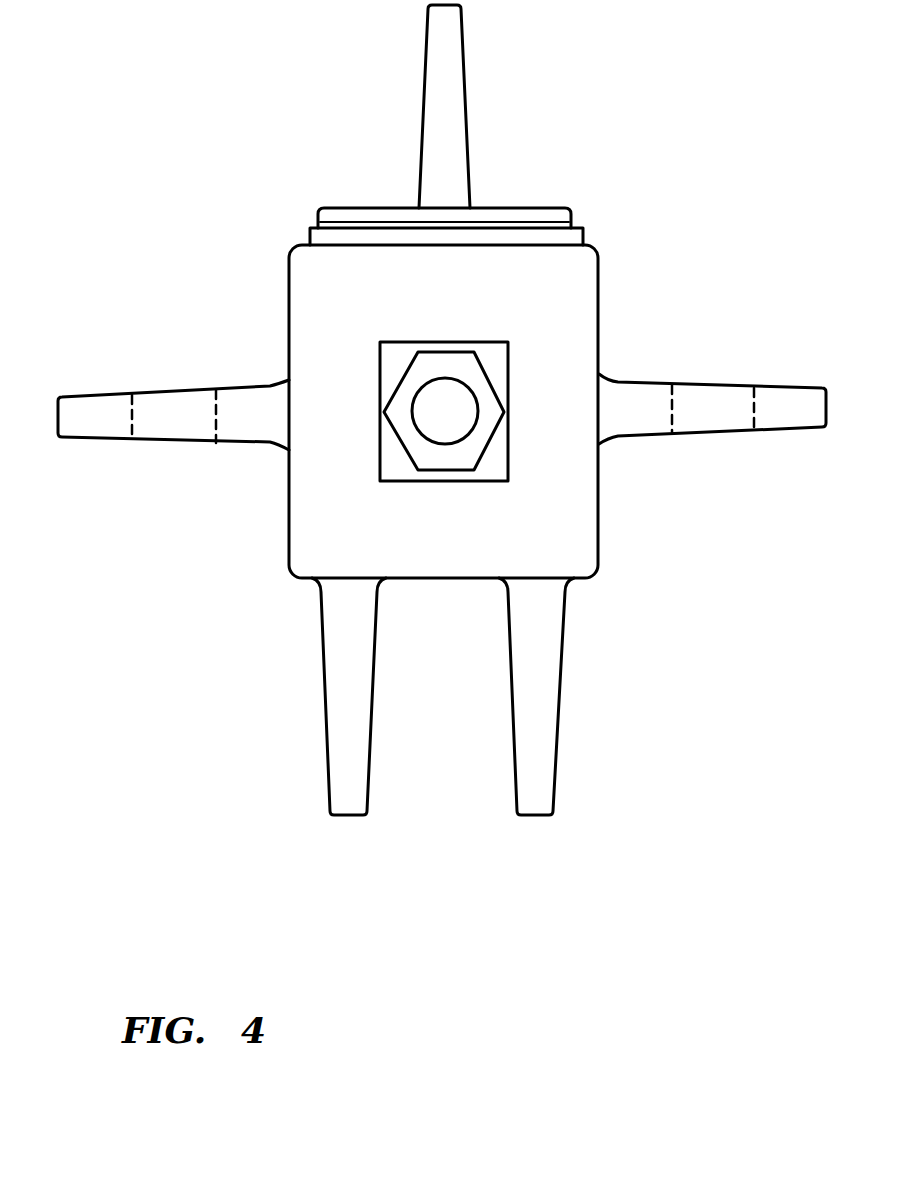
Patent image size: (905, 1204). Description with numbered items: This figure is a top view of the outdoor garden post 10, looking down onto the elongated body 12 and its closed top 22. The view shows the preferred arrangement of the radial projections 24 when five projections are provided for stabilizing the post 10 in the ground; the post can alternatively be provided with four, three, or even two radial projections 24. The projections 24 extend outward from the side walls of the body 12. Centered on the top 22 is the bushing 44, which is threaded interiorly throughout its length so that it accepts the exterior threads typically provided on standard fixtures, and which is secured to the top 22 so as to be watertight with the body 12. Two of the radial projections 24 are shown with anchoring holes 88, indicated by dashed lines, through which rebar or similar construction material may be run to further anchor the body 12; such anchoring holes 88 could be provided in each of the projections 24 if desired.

The post 10 is at (238, 182).
The elongated body 12 is at (601, 280).
The closed top 22 is at (572, 302).
The radial projections 24 is at (464, 190).
The bushing 44 is at (460, 460).
The anchoring holes 88 is at (187, 425).